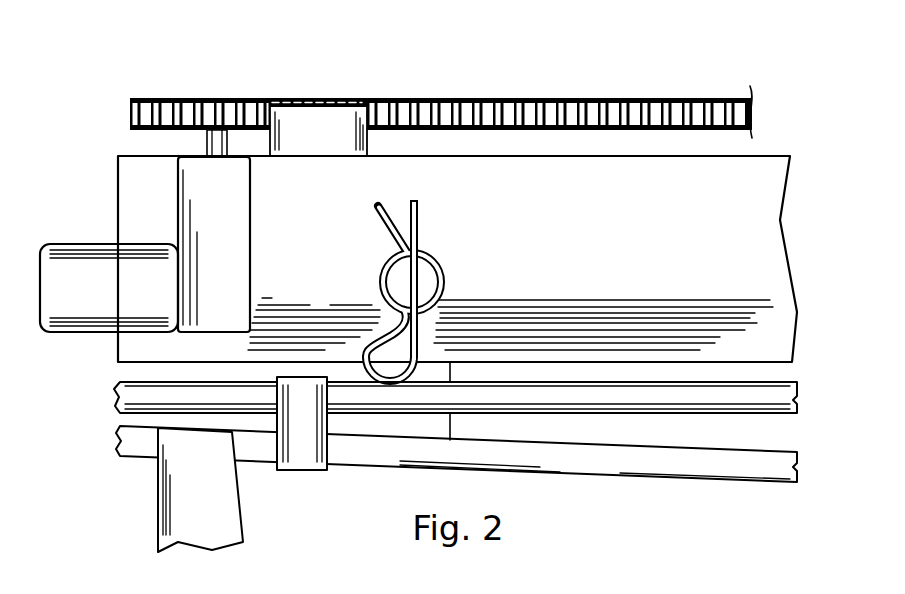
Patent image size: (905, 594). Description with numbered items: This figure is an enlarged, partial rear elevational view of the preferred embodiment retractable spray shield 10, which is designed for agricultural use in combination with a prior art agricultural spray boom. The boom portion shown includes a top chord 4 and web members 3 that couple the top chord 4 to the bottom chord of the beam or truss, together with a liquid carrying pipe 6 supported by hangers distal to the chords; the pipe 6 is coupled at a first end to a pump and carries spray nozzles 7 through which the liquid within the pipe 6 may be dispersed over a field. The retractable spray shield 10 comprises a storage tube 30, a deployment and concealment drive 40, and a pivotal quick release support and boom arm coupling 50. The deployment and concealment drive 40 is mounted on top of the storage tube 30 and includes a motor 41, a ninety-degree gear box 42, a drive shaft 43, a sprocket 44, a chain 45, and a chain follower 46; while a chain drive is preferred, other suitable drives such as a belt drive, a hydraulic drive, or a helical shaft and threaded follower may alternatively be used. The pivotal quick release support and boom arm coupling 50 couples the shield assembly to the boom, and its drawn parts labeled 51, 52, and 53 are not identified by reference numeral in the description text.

The retractable spray shield 10 is at (748, 62).
The web members 3 is at (190, 499).
The top chord 4 is at (600, 463).
The liquid carrying pipe 6 is at (708, 397).
The spray nozzles 7 is at (305, 461).
The storage tube 30 is at (539, 255).
The deployment and concealment drive 40 is at (267, 86).
The motor 41 is at (98, 299).
The ninety-degree gear box 42 is at (208, 269).
The drive shaft 43 is at (207, 147).
The sprocket 44 is at (170, 110).
The chain 45 is at (402, 98).
The chain follower 46 is at (339, 97).
The pivotal quick release support and boom arm coupling 50 is at (482, 207).
The pin 51 is at (442, 430).
The straight leg 52 is at (455, 279).
The curved leg 53 is at (422, 220).